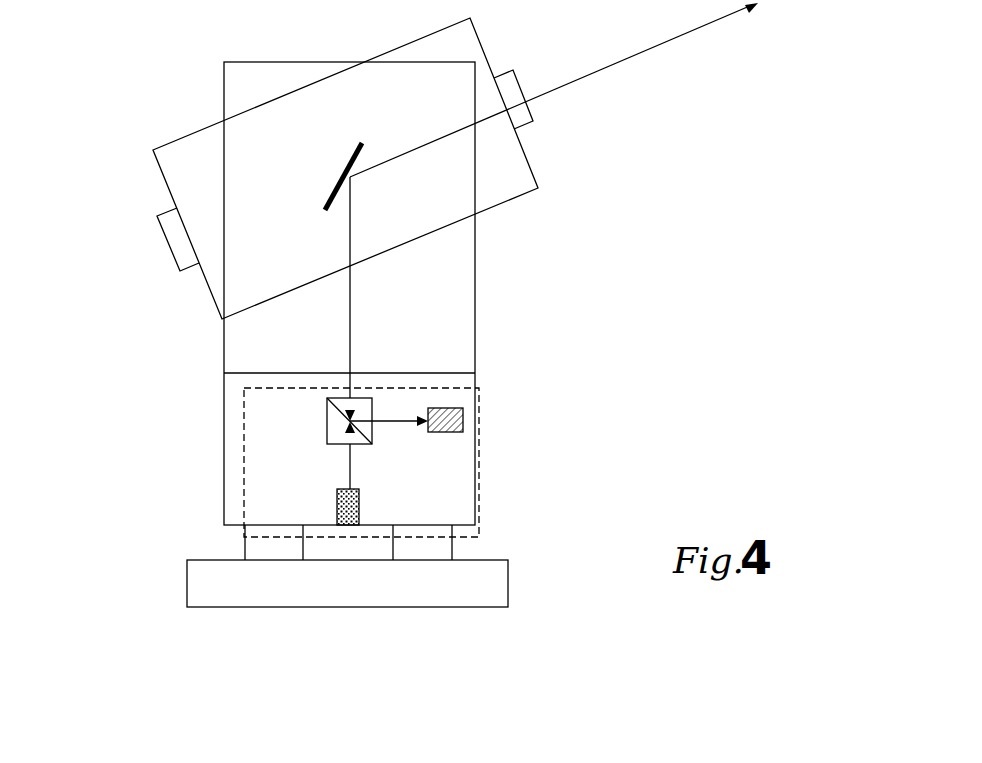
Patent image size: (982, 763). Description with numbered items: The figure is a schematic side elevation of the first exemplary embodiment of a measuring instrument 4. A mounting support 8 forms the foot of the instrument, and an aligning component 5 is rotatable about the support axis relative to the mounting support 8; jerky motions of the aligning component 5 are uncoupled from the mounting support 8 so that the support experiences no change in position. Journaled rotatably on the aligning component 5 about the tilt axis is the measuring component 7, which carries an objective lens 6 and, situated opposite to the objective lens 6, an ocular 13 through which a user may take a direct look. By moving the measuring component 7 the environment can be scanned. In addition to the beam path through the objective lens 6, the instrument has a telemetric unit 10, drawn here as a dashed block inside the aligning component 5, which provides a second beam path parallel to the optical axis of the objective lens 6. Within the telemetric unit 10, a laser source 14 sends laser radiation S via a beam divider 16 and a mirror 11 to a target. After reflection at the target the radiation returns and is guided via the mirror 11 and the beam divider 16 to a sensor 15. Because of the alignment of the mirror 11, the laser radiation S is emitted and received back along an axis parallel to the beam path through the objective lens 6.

The measuring instrument 4 is at (427, 332).
The aligning component 5 is at (311, 279).
The objective lens 6 is at (554, 125).
The measuring component 7 is at (383, 168).
The mounting support 8 is at (328, 610).
The telemetric unit 10 is at (395, 454).
The mirror 11 is at (247, 152).
The ocular 13 is at (147, 270).
The laser source 14 is at (255, 481).
The sensor 15 is at (521, 401).
The beam divider 16 is at (289, 409).
The laser radiation S is at (554, 246).